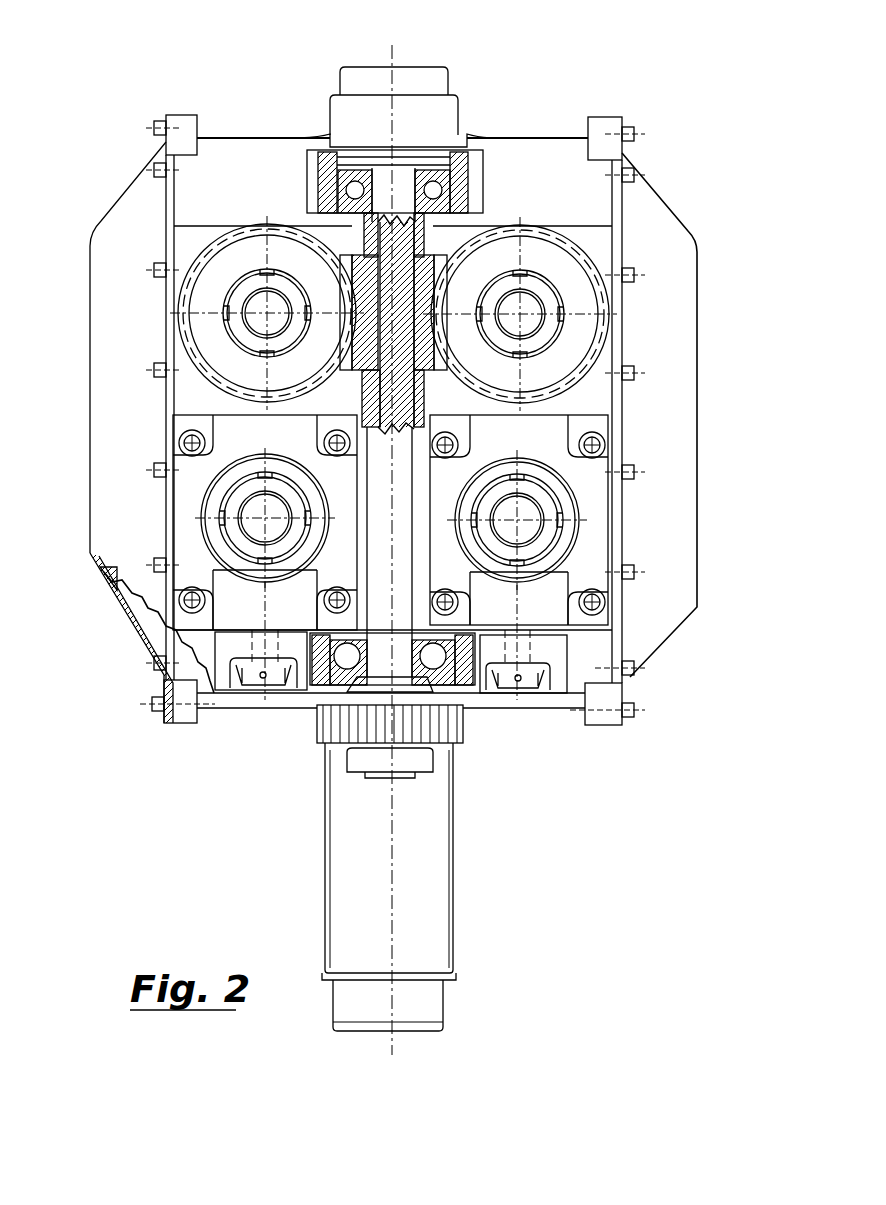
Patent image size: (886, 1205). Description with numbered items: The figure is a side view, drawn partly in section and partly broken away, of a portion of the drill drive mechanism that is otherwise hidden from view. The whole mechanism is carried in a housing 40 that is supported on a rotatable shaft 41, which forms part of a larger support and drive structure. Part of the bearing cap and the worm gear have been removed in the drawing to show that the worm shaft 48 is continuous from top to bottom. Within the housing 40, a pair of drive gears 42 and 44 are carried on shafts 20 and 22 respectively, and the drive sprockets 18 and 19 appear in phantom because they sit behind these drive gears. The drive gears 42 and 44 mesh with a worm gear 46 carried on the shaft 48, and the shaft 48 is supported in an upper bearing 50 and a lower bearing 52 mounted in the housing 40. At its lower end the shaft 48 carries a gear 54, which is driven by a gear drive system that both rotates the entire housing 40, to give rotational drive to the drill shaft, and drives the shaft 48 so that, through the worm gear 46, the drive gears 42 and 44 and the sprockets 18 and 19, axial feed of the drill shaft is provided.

The drive sprocket 18 is at (582, 302).
The drive sprocket 19 is at (218, 258).
The shaft 20 is at (525, 307).
The shaft 22 is at (258, 298).
The housing 40 is at (658, 652).
The rotatable shaft 41 is at (423, 832).
The drive gear 42 is at (577, 393).
The drive gear 44 is at (226, 268).
The worm gear 46 is at (583, 432).
The worm shaft 48 is at (465, 230).
The bearing 50 is at (320, 165).
The bearing 52 is at (472, 690).
The gear 54 is at (315, 725).